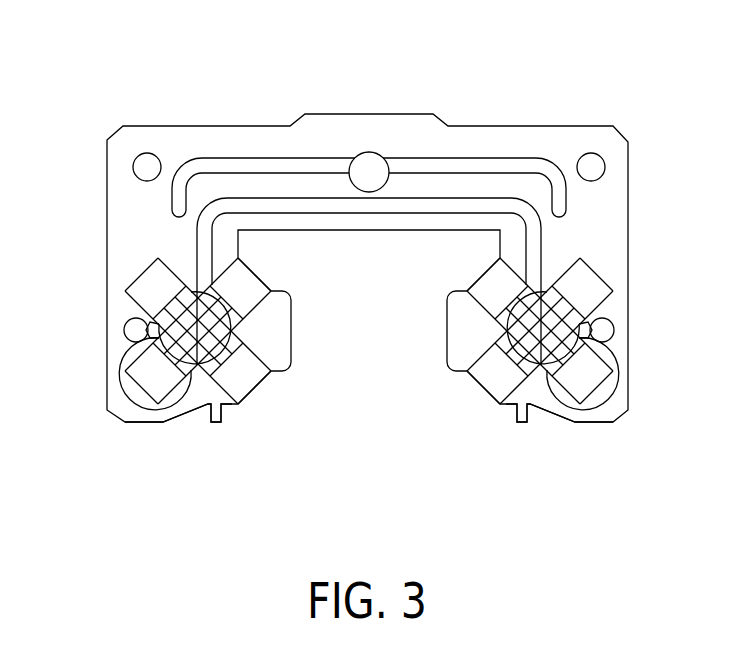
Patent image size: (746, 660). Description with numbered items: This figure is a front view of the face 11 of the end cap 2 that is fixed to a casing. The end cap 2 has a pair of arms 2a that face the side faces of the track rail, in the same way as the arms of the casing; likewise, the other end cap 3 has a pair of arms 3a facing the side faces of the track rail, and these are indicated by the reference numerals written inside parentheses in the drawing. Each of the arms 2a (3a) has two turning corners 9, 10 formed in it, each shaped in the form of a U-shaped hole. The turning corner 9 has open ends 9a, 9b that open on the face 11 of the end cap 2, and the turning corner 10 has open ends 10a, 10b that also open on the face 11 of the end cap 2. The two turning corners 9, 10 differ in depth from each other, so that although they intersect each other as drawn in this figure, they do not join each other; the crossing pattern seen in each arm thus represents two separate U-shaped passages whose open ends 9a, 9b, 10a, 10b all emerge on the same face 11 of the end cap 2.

The end cap 2 is at (377, 221).
The end cap 3 is at (565, 137).
The arms 2a is at (389, 448).
The arms 3a is at (152, 416).
The turning corner 9 is at (132, 313).
The open end 9a is at (120, 272).
The open end 9b is at (245, 376).
The turning corner 10 is at (252, 312).
The open end 10a is at (120, 372).
The open end 10b is at (248, 286).
The face 11 is at (412, 128).